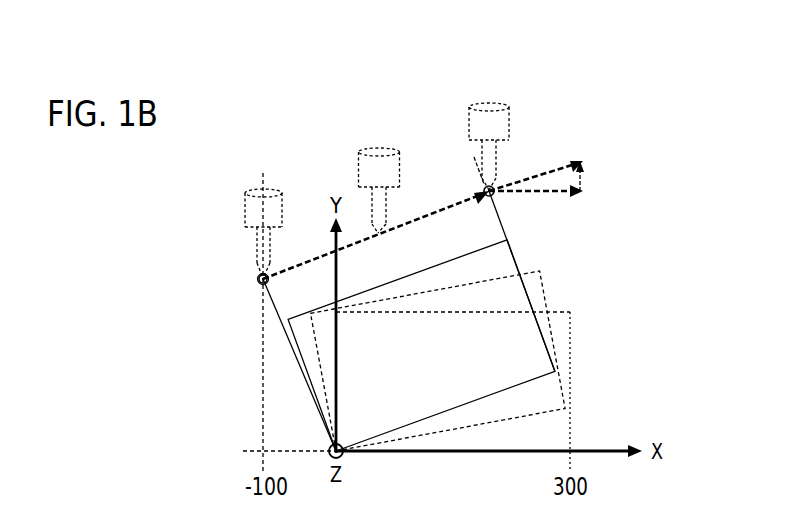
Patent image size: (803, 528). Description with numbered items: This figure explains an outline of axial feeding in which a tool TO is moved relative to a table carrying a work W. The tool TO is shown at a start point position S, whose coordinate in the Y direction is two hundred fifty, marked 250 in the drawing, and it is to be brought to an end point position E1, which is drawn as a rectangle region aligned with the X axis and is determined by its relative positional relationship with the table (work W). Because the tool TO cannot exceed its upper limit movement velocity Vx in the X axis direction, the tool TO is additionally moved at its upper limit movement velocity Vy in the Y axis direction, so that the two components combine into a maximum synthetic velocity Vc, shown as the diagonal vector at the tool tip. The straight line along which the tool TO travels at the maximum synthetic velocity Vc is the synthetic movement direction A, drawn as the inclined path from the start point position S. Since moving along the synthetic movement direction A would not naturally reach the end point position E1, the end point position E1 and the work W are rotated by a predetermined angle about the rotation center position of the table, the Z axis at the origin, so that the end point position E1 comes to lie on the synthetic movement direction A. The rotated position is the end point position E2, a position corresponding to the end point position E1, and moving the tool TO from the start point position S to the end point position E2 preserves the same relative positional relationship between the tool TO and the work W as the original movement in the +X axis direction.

The tool start point marker / workpiece coordinate 250 is at (257, 279).
The tool TO is at (270, 190).
The end point position E1 is at (570, 312).
The end point position E2 is at (489, 200).
The start point position S is at (258, 290).
The synthetic movement direction A is at (432, 213).
The work W is at (510, 248).
The maximum synthetic velocity Vc is at (540, 174).
The upper limit movement velocity Vx is at (540, 197).
The upper limit movement velocity Vy is at (583, 180).